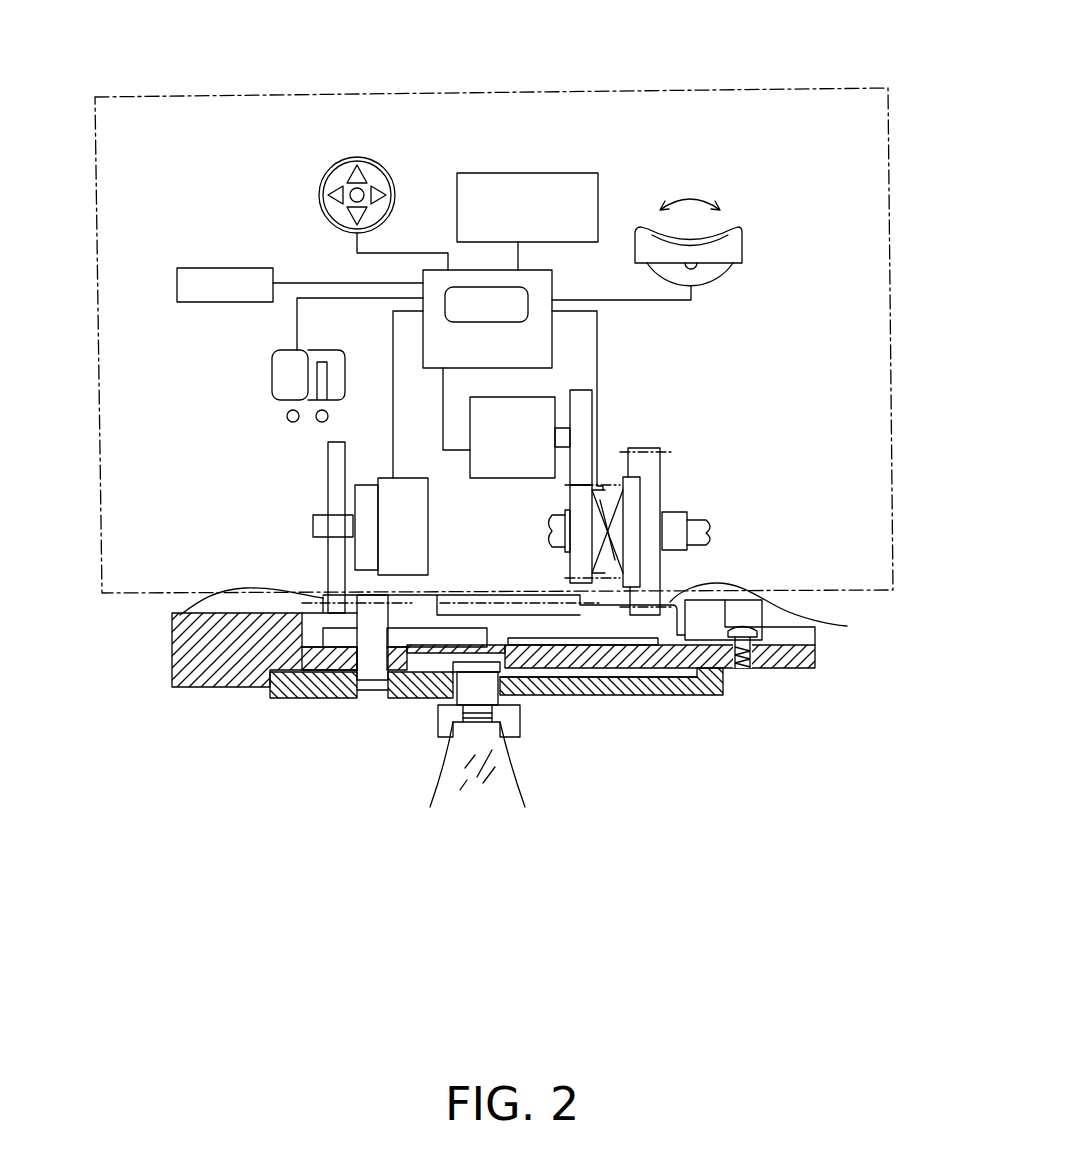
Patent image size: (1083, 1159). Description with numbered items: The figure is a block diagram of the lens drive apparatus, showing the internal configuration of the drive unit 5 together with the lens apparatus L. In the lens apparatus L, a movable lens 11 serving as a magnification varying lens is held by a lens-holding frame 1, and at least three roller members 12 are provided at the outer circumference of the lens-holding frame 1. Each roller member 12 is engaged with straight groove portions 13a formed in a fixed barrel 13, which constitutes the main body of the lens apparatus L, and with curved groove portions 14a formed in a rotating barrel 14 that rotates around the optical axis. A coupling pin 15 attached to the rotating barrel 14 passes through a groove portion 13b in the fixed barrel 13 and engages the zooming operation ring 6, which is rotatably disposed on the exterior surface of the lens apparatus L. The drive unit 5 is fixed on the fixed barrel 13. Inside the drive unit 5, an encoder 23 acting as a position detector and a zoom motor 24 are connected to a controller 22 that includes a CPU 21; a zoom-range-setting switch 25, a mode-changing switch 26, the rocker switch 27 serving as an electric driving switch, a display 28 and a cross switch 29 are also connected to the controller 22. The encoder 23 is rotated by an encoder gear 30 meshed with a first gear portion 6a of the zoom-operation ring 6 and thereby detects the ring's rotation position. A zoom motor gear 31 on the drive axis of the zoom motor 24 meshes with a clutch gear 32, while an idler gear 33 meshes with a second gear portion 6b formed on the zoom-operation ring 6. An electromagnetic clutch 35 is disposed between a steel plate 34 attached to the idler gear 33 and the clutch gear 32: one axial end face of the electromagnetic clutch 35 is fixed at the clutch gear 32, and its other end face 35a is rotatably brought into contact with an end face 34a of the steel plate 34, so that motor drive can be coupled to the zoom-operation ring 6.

The drive unit 5 is at (785, 88).
The cross switch 29 is at (340, 178).
The controller 22 is at (468, 270).
The CPU 21 is at (528, 296).
The zoom-range-setting switch 25 is at (226, 268).
The mode-changing switch 26 is at (283, 373).
The display 28 is at (550, 180).
The rocker switch 27 is at (737, 243).
The zoom motor gear 31 is at (600, 398).
The clutch gear 32 is at (577, 563).
The electromagnetic clutch 35 is at (612, 493).
The idler gear 33 is at (652, 467).
The steel plate 34 is at (633, 493).
The end face of the steel plate 34a is at (620, 515).
The other end face of the electromagnetic clutch 35a is at (623, 542).
The encoder 23 is at (415, 542).
The zoom motor 24 is at (510, 470).
The encoder gear 30 is at (338, 565).
The first gear portion 6a is at (180, 615).
The second gear portion 6b is at (847, 626).
The fixed barrel 13 is at (192, 675).
The straight groove portions 13a is at (413, 665).
The groove portion 13b is at (347, 660).
The coupling pin 15 is at (328, 697).
The roller members 12 is at (437, 700).
The zooming operation ring 6 is at (623, 623).
The rotating barrel 14 is at (693, 697).
The curved groove portions 14a is at (538, 697).
The lens-holding frame 1 is at (520, 723).
The movable lens 11 is at (480, 790).
The lens apparatus L is at (146, 702).